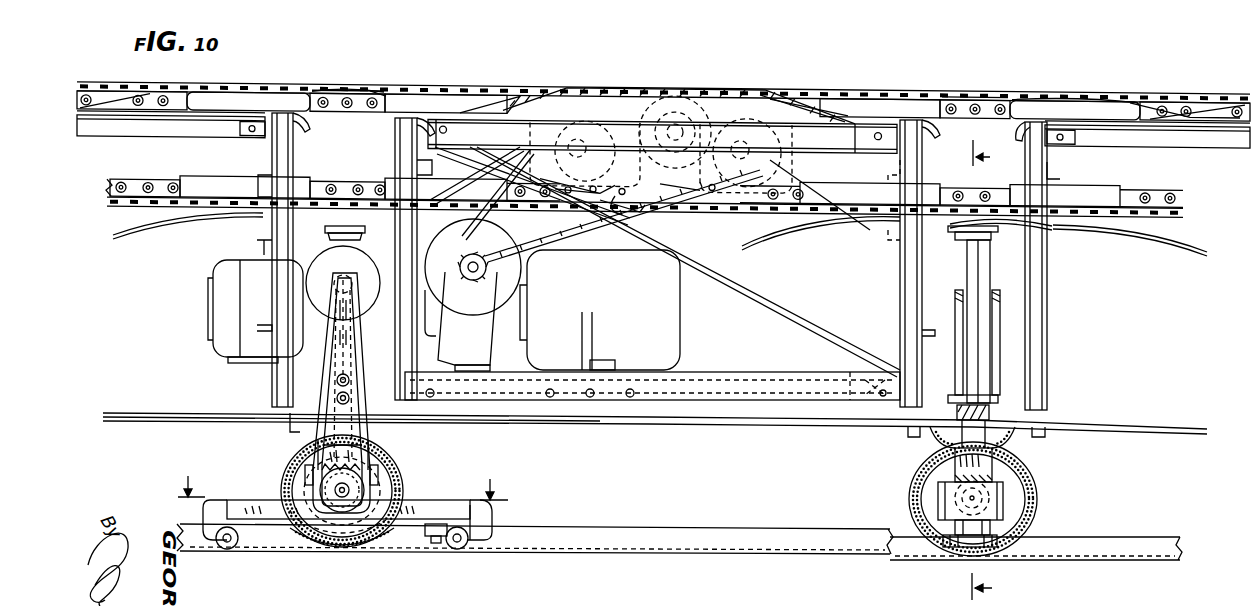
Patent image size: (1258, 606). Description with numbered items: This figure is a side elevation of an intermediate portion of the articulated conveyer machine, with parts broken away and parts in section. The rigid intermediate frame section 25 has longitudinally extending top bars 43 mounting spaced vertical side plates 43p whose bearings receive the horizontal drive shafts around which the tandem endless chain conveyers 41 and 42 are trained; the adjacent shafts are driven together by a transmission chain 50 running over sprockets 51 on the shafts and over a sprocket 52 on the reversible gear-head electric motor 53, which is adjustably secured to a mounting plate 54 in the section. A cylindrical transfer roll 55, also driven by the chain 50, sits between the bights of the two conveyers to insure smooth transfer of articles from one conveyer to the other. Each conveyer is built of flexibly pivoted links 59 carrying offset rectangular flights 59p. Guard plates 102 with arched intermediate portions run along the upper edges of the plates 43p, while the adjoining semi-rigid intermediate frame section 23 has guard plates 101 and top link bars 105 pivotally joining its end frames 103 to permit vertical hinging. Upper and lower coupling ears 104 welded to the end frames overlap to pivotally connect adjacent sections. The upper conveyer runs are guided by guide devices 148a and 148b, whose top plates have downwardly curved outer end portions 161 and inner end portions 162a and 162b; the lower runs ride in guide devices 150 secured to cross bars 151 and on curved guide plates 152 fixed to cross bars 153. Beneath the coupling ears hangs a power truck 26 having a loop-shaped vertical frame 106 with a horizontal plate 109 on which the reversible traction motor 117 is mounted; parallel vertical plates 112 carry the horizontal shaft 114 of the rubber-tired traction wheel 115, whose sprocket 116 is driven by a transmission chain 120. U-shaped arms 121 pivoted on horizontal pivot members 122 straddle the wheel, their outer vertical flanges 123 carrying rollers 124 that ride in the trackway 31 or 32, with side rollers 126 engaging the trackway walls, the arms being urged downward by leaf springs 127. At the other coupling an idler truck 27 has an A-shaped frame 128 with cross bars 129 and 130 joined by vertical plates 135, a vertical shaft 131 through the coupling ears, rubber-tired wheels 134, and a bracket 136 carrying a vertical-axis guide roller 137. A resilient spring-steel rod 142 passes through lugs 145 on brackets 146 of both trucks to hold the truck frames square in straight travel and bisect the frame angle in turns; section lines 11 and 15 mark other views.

The guide device 148b is at (252, 95).
The endless chain conveyer 41 is at (333, 88).
The outer end portion 161 is at (379, 90).
The guide device 148a is at (441, 96).
The top bar 43 is at (460, 126).
The inner end portion 162a is at (505, 92).
The transfer roll 55 is at (661, 87).
The vertical side plate 43p is at (759, 93).
The guard plate 102 is at (847, 106).
The endless chain conveyer 42 is at (973, 94).
The flight 59p is at (1052, 95).
The inner end portion 162b is at (1205, 103).
The top link bar 105 is at (121, 128).
The guard plate 101 is at (176, 112).
The guide device 150 is at (205, 184).
The chain conveyer link 59 is at (358, 108).
The section line 15 is at (985, 367).
The cross bar 151 is at (1049, 172).
The end frame 103 is at (909, 292).
The intermediate frame section 23 is at (1049, 353).
The guide plate 152 is at (132, 238).
The cross bar 153 is at (1057, 248).
The sprocket 51 is at (616, 186).
The transmission chain 50 is at (668, 226).
The traction motor 117 is at (235, 334).
The horizontal plate 109 is at (232, 363).
The electric motor 53 is at (680, 342).
The sprocket 52 is at (481, 283).
The mounting plate 54 is at (683, 401).
The intermediate frame section 25 is at (778, 412).
The resilient rod 142 is at (602, 430).
The transmission chain 120 is at (300, 441).
The bracket 146 is at (898, 421).
The lug 145 is at (1042, 433).
The coupling ear 104 is at (265, 248).
The sprocket 116 is at (362, 472).
The vertical frame 106 is at (340, 347).
The vertical plate 112 is at (346, 453).
The traction wheel 115 is at (306, 477).
The horizontal shaft 114 is at (336, 492).
The U-shaped arm 121 is at (220, 500).
The vertical flange 123 is at (466, 516).
The roller 124 is at (472, 547).
The roller 126 is at (437, 544).
The leaf spring 127 is at (306, 546).
The pivot member 122 is at (380, 545).
The power truck 26 is at (434, 486).
The section line 11 is at (337, 488).
The trackway 31 is at (722, 550).
The rail 32 is at (1140, 540).
The vertical shaft 131 is at (976, 270).
The vertical frame 128 is at (1001, 301).
The cross bar 129 is at (1000, 413).
The cross bar 130 is at (1001, 477).
The wheel 134 is at (930, 470).
The vertical plate 135 is at (930, 490).
The bracket 136 is at (945, 501).
The guide roller 137 is at (956, 547).
The idler truck 27 is at (1071, 494).